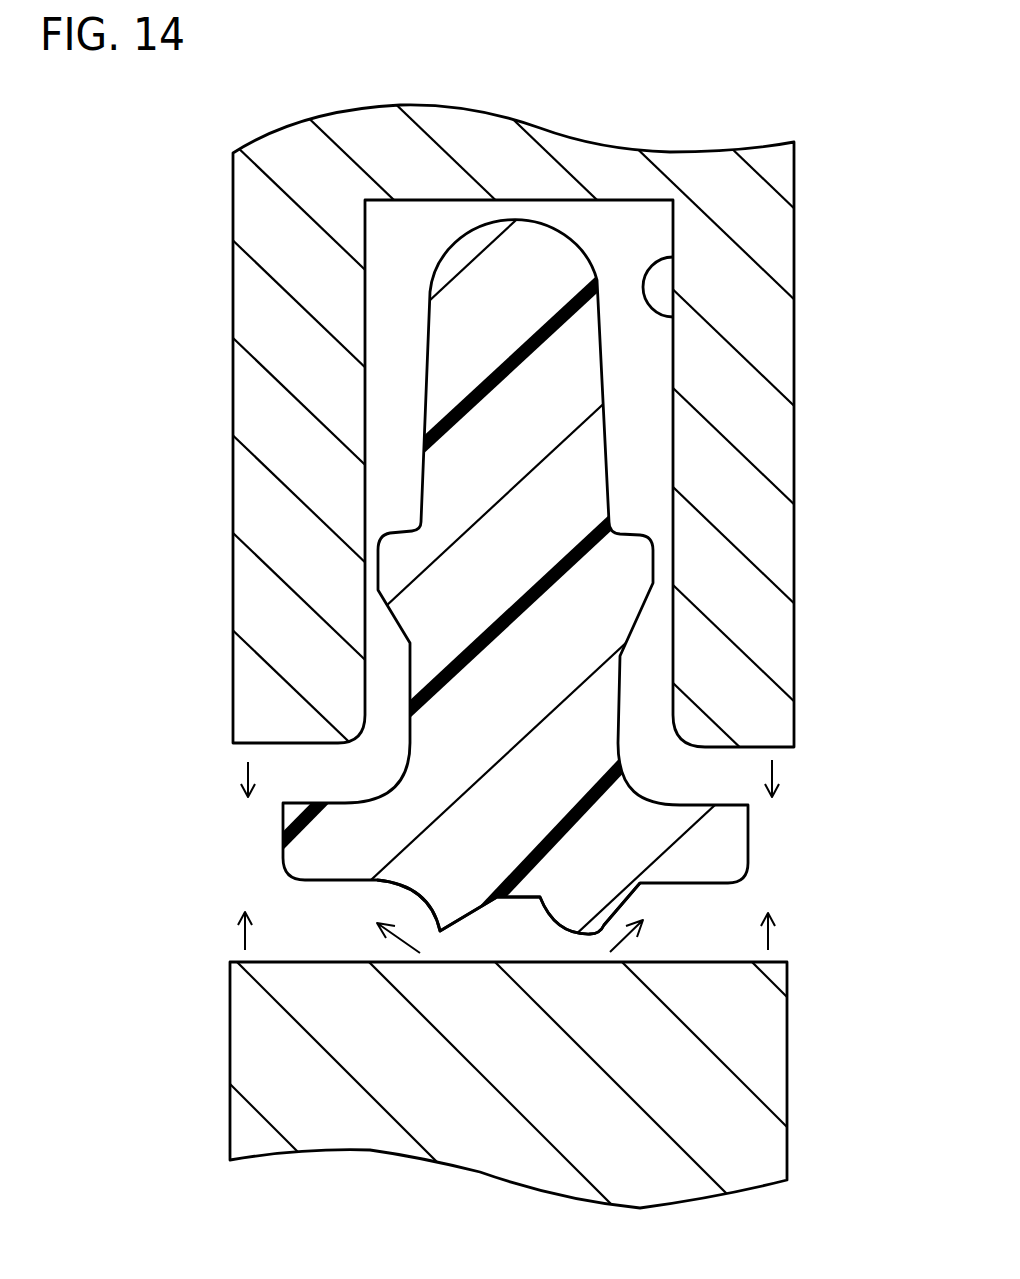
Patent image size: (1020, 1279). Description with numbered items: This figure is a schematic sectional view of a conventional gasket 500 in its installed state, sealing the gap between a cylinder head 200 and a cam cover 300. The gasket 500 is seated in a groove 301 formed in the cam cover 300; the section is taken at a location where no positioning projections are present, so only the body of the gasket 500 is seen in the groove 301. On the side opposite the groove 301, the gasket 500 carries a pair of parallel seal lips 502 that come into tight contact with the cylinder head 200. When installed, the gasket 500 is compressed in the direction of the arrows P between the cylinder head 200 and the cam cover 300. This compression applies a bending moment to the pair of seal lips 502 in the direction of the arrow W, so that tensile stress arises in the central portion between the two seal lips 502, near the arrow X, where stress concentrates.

The gasket 500 is at (473, 583).
The seal lips 502 is at (438, 922).
The cam cover 300 is at (772, 437).
The groove 301 is at (680, 318).
The cylinder head 200 is at (770, 1072).
The arrow X is at (531, 897).
The arrow W is at (508, 931).
The arrows P is at (510, 859).